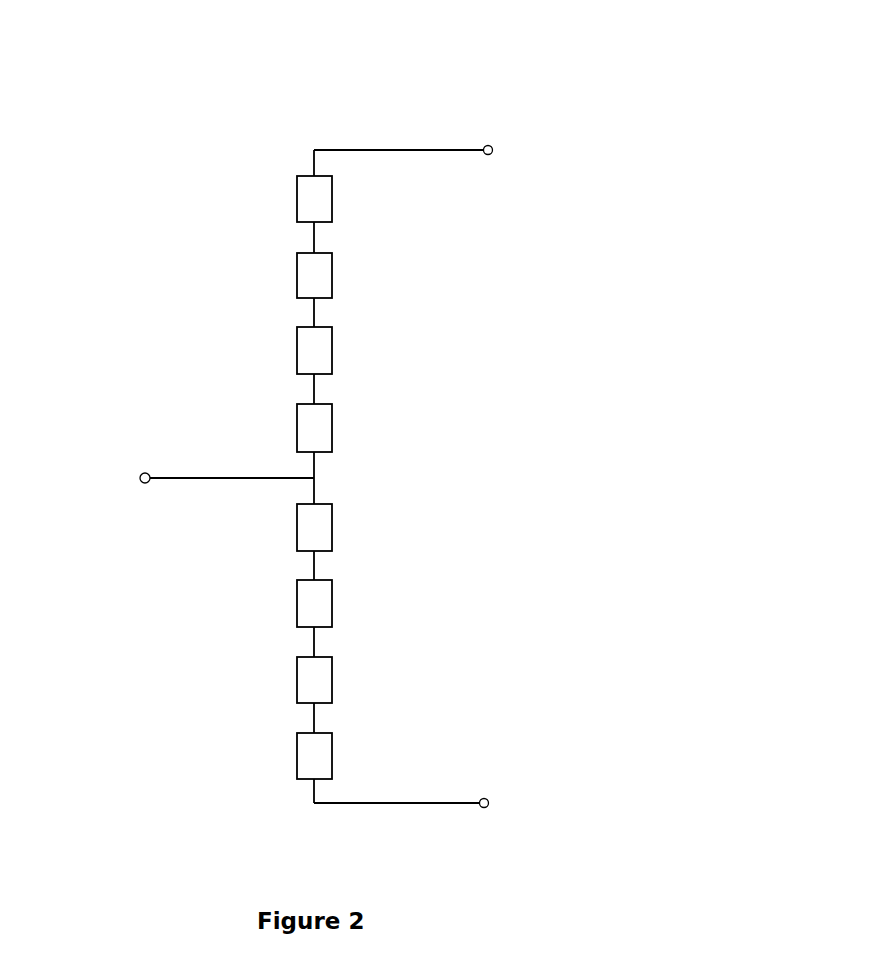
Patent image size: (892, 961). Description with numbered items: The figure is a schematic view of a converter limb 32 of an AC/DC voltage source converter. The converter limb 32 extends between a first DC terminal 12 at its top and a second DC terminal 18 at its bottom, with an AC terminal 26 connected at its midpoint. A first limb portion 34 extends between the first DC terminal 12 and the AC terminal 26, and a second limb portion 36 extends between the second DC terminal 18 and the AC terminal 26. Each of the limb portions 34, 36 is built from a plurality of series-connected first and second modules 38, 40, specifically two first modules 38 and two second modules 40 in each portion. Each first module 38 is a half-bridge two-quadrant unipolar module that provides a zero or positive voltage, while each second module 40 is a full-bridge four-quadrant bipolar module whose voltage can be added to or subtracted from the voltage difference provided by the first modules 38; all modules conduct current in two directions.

The first DC terminal 12 is at (492, 146).
The second DC terminal 18 is at (487, 809).
The AC terminal 26 is at (140, 474).
The converter limb 32 is at (262, 110).
The first limb portion 34 is at (446, 332).
The second limb portion 36 is at (414, 643).
The first module 38 is at (313, 423).
The second module 40 is at (313, 272).